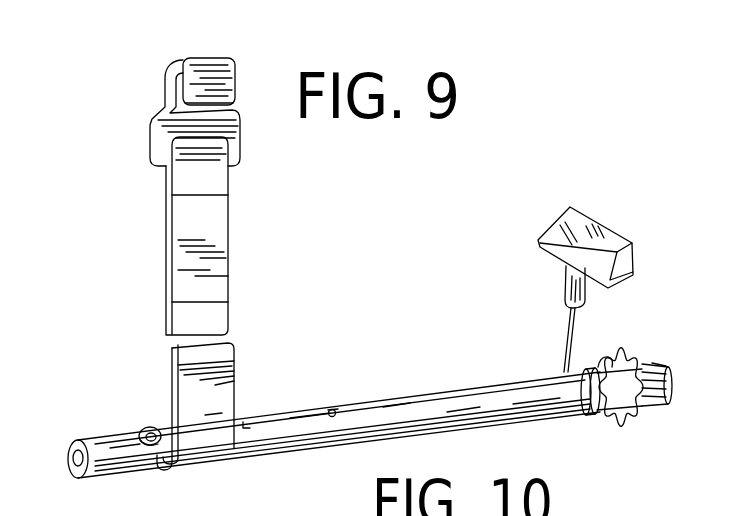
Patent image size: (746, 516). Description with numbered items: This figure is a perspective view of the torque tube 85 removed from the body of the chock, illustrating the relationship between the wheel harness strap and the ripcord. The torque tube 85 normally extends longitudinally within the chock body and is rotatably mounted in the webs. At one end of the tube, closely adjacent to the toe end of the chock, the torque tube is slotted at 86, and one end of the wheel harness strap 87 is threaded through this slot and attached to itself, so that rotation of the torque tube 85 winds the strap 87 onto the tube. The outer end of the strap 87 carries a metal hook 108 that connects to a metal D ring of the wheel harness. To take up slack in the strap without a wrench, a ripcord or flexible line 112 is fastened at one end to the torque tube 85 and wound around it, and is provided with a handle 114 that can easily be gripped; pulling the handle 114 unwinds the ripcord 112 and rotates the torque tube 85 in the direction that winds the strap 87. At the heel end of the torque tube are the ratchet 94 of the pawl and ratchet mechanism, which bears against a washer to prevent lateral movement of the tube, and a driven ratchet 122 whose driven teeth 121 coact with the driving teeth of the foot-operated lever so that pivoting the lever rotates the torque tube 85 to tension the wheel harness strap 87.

The torque tube 85 is at (408, 412).
The slot 86 is at (152, 443).
The wheel harness strap 87 is at (220, 370).
The ratchet 94 is at (620, 420).
The metal hook 108 is at (240, 80).
The ripcord 112 is at (575, 342).
The handle 114 is at (606, 240).
The driven teeth 121 is at (664, 385).
The driven ratchet 122 is at (653, 363).